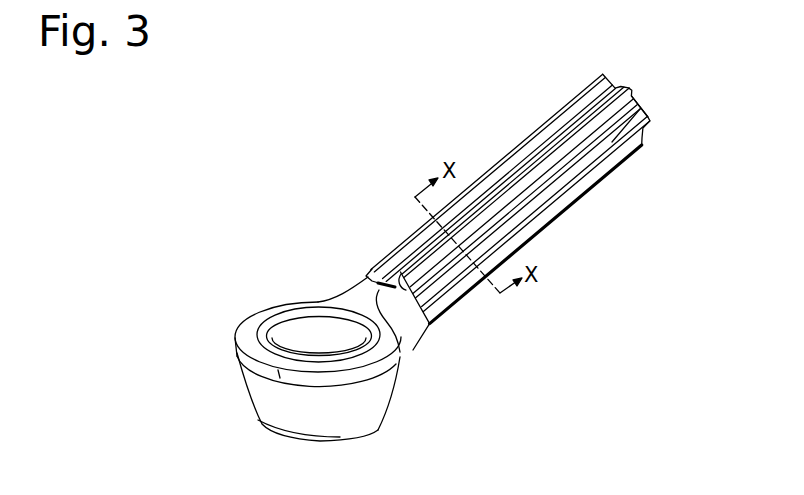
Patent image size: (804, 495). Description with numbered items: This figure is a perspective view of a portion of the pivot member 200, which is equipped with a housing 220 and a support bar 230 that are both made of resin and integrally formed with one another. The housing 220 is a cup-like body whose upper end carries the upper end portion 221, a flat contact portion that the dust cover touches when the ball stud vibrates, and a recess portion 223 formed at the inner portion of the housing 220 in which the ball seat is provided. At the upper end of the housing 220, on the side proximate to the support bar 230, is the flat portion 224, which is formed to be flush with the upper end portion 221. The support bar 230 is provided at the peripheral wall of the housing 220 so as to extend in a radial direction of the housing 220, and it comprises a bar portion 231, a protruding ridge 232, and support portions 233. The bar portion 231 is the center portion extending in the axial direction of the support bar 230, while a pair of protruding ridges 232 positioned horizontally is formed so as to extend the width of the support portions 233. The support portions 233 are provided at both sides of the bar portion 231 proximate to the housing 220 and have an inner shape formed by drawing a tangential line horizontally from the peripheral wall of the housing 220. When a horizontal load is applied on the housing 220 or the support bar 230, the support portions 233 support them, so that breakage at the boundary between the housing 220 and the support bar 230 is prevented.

The pivot member 200 is at (244, 383).
The housing 220 is at (263, 407).
The upper end portion 221 is at (252, 342).
The recess portion 223 is at (298, 337).
The flat portion 224 is at (358, 293).
The support bar 230 is at (540, 125).
The bar portion 231 is at (637, 104).
The protruding ridge 232 is at (612, 143).
The support portion 233 is at (408, 333).